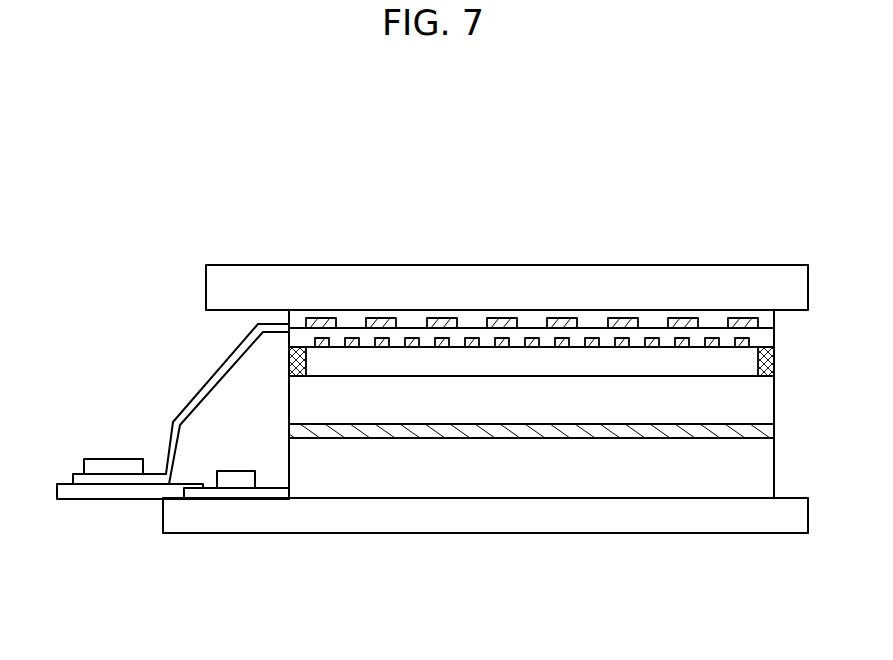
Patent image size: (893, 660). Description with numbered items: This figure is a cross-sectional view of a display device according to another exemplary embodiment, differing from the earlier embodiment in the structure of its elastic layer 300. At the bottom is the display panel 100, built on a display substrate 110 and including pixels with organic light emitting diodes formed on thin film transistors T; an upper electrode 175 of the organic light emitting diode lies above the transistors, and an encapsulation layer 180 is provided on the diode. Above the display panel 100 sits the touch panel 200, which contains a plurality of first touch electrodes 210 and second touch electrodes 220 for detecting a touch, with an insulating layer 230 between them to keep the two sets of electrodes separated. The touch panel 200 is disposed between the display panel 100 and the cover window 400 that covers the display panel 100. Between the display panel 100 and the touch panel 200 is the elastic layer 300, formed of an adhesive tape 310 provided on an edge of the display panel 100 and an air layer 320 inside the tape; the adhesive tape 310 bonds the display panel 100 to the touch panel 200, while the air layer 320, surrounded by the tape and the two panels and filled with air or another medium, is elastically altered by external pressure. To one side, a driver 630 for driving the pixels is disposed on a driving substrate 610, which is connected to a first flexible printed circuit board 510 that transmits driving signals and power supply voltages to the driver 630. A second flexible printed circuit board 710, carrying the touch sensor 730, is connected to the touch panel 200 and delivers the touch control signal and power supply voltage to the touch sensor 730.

The display panel 100 is at (495, 590).
The display substrate 110 is at (515, 525).
The thin film transistor T is at (553, 472).
The upper electrode 175 is at (595, 432).
The encapsulation layer 180 is at (655, 410).
The touch panel 200 is at (437, 214).
The first touch electrodes 210 is at (592, 347).
The second touch electrodes 220 is at (443, 318).
The insulating layer 230 is at (537, 332).
The elastic layer 300 is at (808, 214).
The adhesive tape 310 is at (765, 347).
The air layer 320 is at (703, 362).
The cover window 400 is at (380, 272).
The first flexible printed circuit board 510 is at (98, 493).
The driving substrate 610 is at (209, 493).
The driver 630 is at (235, 490).
The second flexible printed circuit board 710 is at (206, 382).
The touch sensor 730 is at (108, 462).